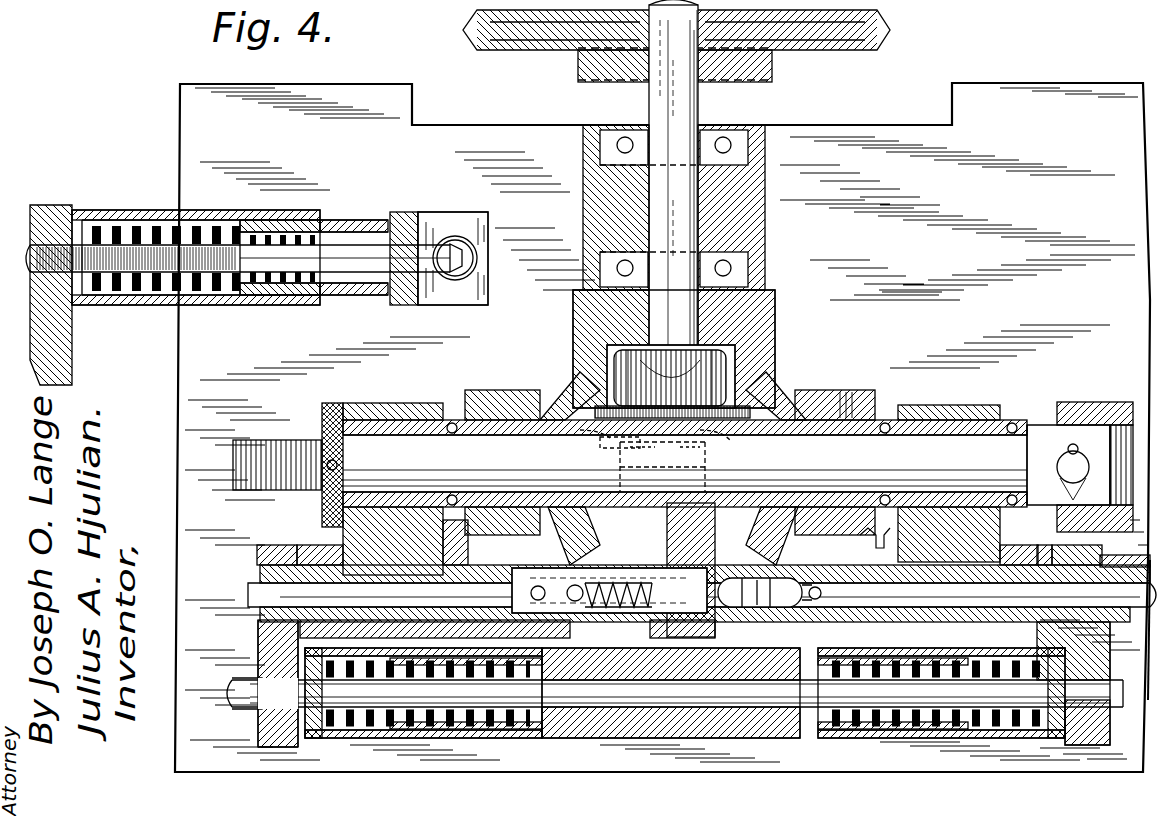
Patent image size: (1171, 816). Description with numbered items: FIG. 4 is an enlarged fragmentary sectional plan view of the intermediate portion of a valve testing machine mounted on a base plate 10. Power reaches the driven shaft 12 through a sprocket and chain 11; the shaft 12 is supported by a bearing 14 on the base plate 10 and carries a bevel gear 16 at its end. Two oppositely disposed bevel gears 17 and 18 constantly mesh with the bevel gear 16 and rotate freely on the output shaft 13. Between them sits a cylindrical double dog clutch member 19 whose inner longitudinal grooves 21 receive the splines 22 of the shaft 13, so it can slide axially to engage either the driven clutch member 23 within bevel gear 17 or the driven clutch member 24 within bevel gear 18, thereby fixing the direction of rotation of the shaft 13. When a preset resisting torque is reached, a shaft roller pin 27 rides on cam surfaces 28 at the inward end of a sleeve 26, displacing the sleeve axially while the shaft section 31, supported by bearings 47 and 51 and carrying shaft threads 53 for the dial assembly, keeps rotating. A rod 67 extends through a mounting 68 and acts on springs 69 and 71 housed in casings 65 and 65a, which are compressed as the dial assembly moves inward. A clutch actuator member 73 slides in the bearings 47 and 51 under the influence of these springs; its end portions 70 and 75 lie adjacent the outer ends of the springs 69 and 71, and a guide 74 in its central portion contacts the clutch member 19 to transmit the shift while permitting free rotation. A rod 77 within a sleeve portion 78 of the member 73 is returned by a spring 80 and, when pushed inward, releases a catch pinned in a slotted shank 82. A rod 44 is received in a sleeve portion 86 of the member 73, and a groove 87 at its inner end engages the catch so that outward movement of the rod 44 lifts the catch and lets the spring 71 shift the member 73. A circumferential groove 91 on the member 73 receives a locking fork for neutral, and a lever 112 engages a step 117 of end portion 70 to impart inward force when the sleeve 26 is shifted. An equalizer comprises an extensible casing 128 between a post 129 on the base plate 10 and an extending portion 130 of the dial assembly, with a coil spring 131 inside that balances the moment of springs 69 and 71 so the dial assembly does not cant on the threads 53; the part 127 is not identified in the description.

The base plate 10 is at (182, 157).
The sprocket and chain 11 is at (880, 48).
The driven shaft 12 is at (700, 103).
The shaft 13 is at (906, 443).
The bearing 14 is at (765, 190).
The bevel gear 16 is at (775, 312).
The bevel gear 17 is at (848, 392).
The bevel gear 18 is at (550, 395).
The double dog clutch member 19 is at (770, 366).
The inner peripheral longitudinal grooves 21 is at (655, 440).
The splines 22 is at (618, 443).
The driven clutch member 23 is at (812, 400).
The driven clutch member 24 is at (522, 392).
The sleeve 26 is at (1118, 404).
The shaft roller pin 27 is at (1078, 455).
The cam surfaces 28 is at (1057, 410).
The shaft section 31 is at (965, 445).
The rod 44 is at (1148, 614).
The bearing 47 is at (946, 405).
The bearing 51 is at (395, 403).
The shaft threads 53 is at (278, 440).
The casing 65 is at (900, 736).
The casing 65a is at (370, 736).
The rod 67 is at (236, 679).
The mounting 68 is at (700, 736).
The spring 69 is at (1018, 727).
The end portion 70 is at (1112, 572).
The spring 71 is at (415, 725).
The clutch actuator member 73 is at (476, 566).
The guide 74 is at (667, 534).
The end portion 75 is at (262, 545).
The rod 77 is at (262, 590).
The sleeve portion 78 is at (292, 545).
The spring 80 is at (598, 583).
The slotted shank 82 is at (570, 632).
The sleeve portion 86 is at (790, 607).
The groove 87 is at (748, 607).
The circumferential groove 91 is at (868, 542).
The lever 112 is at (1090, 546).
The step 117 is at (1045, 546).
The spring 127 is at (204, 203).
The extensible casing 128 is at (310, 213).
The post 129 is at (405, 212).
The extending portion 130 is at (74, 335).
The coil spring 131 is at (222, 305).